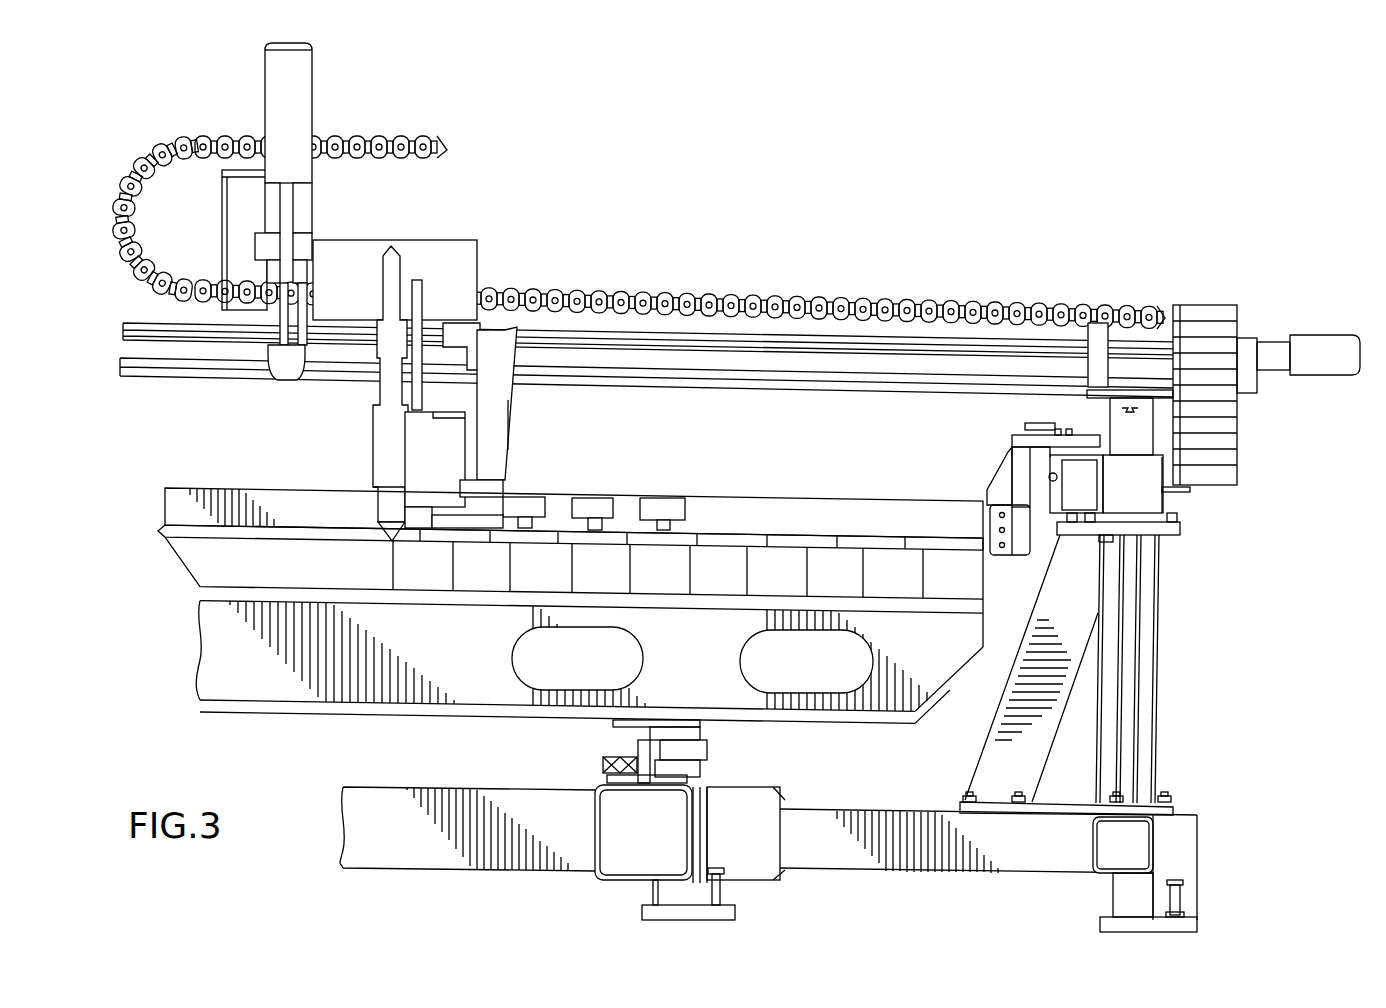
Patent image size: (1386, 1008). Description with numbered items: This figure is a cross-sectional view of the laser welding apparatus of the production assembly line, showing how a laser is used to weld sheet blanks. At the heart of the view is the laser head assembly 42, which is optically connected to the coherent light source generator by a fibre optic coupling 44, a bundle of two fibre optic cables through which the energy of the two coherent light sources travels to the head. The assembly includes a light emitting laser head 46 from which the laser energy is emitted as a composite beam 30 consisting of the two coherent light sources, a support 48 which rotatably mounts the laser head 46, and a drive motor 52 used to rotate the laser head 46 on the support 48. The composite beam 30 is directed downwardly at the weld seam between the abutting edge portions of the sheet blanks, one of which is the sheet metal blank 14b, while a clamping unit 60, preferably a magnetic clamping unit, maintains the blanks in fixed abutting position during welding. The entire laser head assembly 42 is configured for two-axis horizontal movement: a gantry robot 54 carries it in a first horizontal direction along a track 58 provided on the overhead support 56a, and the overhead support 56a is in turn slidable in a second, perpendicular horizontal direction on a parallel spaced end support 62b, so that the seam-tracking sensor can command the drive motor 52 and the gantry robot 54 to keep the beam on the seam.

The gantry robot 54 is at (292, 90).
The laser head assembly 42 is at (437, 240).
The fibre optic coupling 44 is at (610, 300).
The overhead support 56a is at (662, 355).
The track 58 is at (775, 347).
The end support 62b is at (1107, 418).
The drive motor 52 is at (390, 453).
The support 48 is at (455, 468).
The laser head 46 is at (390, 538).
The composite beam 30 is at (443, 517).
The clamping unit 60 is at (543, 605).
The sheet metal blank 14b is at (263, 537).